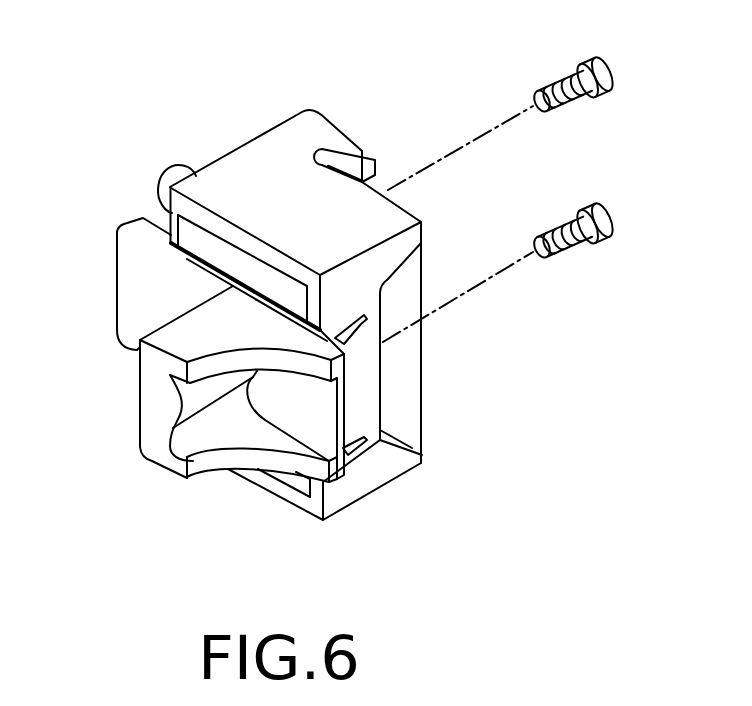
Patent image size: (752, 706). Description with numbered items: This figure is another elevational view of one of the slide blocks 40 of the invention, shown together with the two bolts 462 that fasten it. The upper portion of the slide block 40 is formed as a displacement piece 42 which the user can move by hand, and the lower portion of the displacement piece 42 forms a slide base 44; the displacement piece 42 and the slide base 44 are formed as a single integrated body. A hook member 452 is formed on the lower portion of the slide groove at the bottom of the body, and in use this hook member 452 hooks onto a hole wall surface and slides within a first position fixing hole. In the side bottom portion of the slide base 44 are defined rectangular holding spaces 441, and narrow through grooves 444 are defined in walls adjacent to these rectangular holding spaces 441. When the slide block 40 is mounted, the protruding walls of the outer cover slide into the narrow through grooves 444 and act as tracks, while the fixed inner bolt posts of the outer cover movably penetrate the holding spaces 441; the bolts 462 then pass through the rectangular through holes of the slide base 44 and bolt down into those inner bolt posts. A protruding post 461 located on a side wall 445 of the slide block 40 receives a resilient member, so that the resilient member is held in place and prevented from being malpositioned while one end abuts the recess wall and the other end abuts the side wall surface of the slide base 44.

The slide block 40 is at (384, 96).
The displacement piece 42 is at (193, 445).
The slide base 44 is at (383, 218).
The rectangular holding space 441 is at (207, 236).
The narrow through groove 444 is at (353, 327).
The side wall 445 is at (226, 152).
The hook member 452 is at (364, 154).
The protruding post 461 is at (168, 178).
The bolt 462 is at (563, 80).